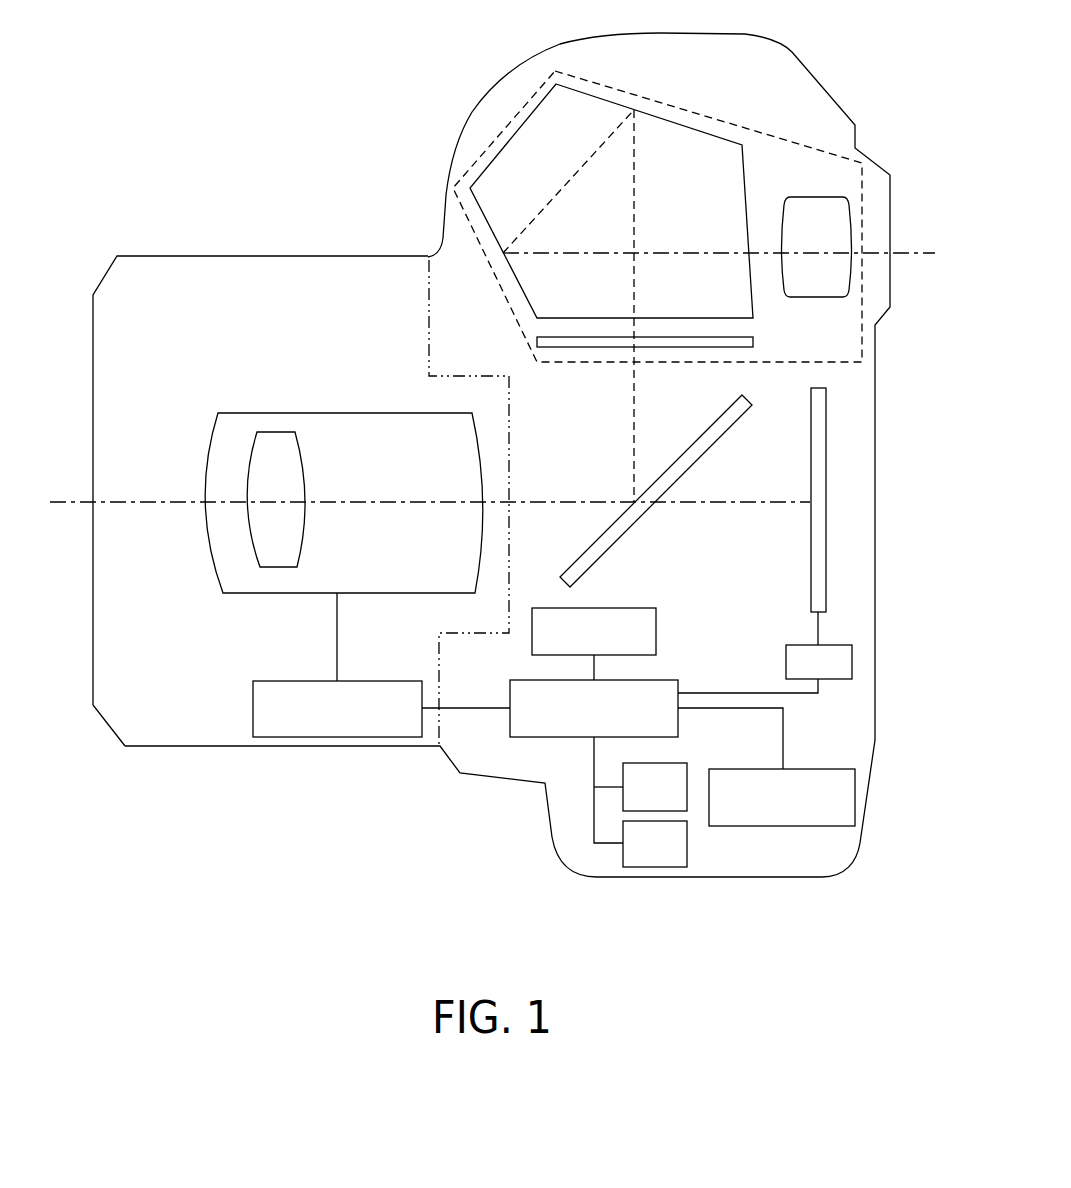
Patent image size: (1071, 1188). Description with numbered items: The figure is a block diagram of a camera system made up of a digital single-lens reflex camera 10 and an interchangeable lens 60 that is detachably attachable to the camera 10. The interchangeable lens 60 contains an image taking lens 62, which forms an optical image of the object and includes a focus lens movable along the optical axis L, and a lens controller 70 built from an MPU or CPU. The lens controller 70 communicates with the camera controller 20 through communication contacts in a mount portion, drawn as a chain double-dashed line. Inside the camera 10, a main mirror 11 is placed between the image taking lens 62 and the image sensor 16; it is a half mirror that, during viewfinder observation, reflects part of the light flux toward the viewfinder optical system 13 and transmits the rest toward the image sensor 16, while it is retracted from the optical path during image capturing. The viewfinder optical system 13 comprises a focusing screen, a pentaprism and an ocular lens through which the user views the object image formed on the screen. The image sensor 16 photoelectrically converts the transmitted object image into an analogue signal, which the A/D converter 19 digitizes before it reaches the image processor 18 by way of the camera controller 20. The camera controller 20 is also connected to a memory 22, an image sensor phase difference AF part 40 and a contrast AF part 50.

The digital single-lens reflex camera 10 is at (777, 76).
The viewfinder optical system 13 is at (763, 163).
The image sensor 16 is at (827, 448).
The main mirror 11 is at (595, 563).
The memory 22 is at (657, 630).
The camera controller 20 is at (533, 680).
The A/D converter 19 is at (786, 662).
The image processor 18 is at (823, 768).
The image sensor phase difference AF (SAF) part 40 is at (688, 763).
The contrast AF (CAF) part 50 is at (688, 843).
The lens controller 70 is at (253, 712).
The interchangeable lens 60 is at (152, 728).
The image taking lens 62 is at (285, 456).
The optical axis L is at (150, 507).